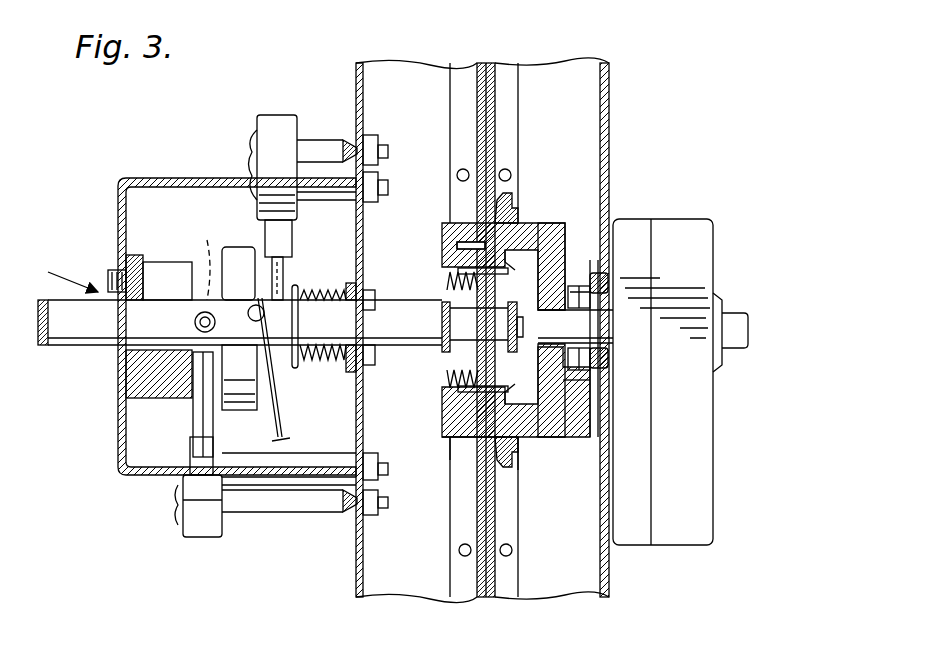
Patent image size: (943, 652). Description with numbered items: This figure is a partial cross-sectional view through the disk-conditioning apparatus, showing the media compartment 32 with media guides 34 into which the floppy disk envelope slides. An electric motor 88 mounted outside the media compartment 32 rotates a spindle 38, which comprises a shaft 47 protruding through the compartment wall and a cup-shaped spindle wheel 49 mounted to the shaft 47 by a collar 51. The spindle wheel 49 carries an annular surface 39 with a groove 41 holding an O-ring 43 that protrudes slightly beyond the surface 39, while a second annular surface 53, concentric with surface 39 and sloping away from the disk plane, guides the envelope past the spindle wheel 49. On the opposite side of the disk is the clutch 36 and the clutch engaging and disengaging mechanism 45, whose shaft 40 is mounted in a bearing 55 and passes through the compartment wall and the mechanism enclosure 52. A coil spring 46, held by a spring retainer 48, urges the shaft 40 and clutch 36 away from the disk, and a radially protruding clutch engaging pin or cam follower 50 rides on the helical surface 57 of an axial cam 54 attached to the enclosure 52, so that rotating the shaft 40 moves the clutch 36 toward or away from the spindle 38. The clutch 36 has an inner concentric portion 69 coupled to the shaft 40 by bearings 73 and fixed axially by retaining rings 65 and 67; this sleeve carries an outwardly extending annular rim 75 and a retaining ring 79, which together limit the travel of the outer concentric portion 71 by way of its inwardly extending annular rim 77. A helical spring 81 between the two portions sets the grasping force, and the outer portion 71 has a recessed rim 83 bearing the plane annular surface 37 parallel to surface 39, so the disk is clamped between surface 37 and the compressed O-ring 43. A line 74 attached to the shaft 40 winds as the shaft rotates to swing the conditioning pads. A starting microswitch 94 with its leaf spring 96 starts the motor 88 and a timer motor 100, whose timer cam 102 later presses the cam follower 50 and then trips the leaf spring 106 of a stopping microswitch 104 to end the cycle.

The media compartment 32 is at (609, 101).
The media guides 34 is at (465, 582).
The clutch 36 is at (443, 400).
The annular surface 37 is at (462, 240).
The spindle 38 is at (590, 322).
The annular surface 39 is at (500, 212).
The shaft 40 is at (96, 335).
The groove 41 is at (512, 228).
The O-ring 43 is at (520, 440).
The clutch engaging and disengaging mechanism 45 is at (56, 275).
The coil spring 46 is at (318, 290).
The shaft 47 is at (752, 326).
The spring retainer 48 is at (296, 370).
The spindle wheel 49 is at (565, 420).
The clutch engaging pin or cam follower 50 is at (207, 260).
The collar 51 is at (585, 287).
The mechanism enclosure 52 is at (135, 178).
The second annular surface 53 is at (505, 472).
The axial cam 54 is at (140, 395).
The bearing 55 is at (368, 290).
The surface 57 is at (160, 262).
The retaining ring 65 is at (444, 314).
The retaining ring 67 is at (542, 280).
The inner concentric portion 69 is at (448, 282).
The outer concentric portion 71 is at (445, 232).
The bearings 73 is at (470, 355).
The line 74 is at (278, 438).
The outwardly extending annular rim 75 is at (455, 378).
The inwardly extending annular rim 77 is at (542, 380).
The retaining ring 79 is at (540, 262).
The helical spring 81 is at (445, 434).
The recessed rim 83 is at (468, 445).
The electric motor 88 is at (700, 246).
The starting microswitch 94 is at (270, 130).
The leaf spring 96 is at (265, 228).
The timer motor 100 is at (240, 247).
The timer cam 102 is at (200, 398).
The stopping microswitch 104 is at (186, 524).
The leaf spring 106 is at (195, 445).